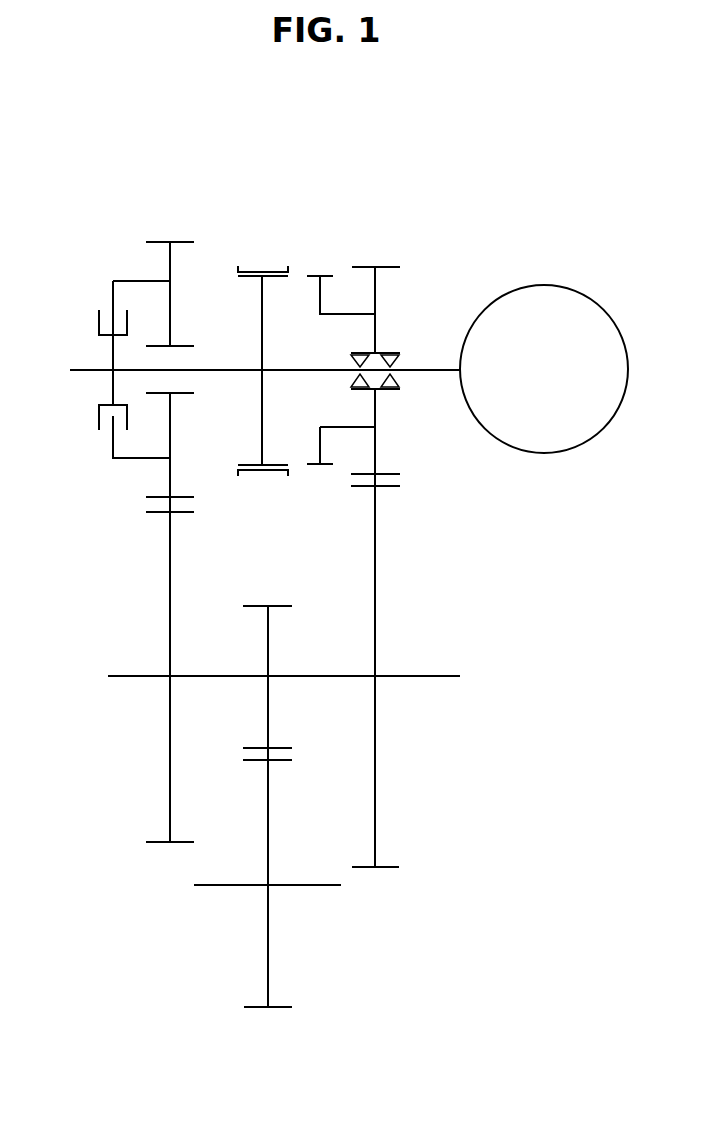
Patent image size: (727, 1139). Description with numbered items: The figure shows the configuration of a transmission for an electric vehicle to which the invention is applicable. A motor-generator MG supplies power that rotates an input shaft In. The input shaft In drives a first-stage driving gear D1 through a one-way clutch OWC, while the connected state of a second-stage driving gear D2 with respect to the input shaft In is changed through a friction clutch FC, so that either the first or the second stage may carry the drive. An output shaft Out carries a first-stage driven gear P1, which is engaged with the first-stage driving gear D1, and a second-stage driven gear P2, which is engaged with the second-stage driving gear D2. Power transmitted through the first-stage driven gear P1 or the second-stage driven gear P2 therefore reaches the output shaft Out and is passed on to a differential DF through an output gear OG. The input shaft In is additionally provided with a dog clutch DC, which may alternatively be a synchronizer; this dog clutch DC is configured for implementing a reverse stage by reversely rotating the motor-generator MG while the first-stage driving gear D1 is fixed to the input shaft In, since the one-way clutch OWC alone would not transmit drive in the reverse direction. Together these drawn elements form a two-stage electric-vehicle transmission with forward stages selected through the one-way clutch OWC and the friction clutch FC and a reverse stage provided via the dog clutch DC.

The input shaft In is at (70, 368).
The friction clutch FC is at (105, 303).
The second-stage driving gear D2 is at (166, 240).
The second-stage driven gear P2 is at (158, 845).
The dog clutch DC is at (262, 260).
The first-stage driving gear D1 is at (365, 265).
The one-way clutch OWC is at (406, 352).
The first-stage driven gear P1 is at (386, 870).
The motor-generator MG is at (544, 369).
The output shaft Out is at (125, 674).
The output gear OG is at (278, 604).
The differential DF is at (290, 984).